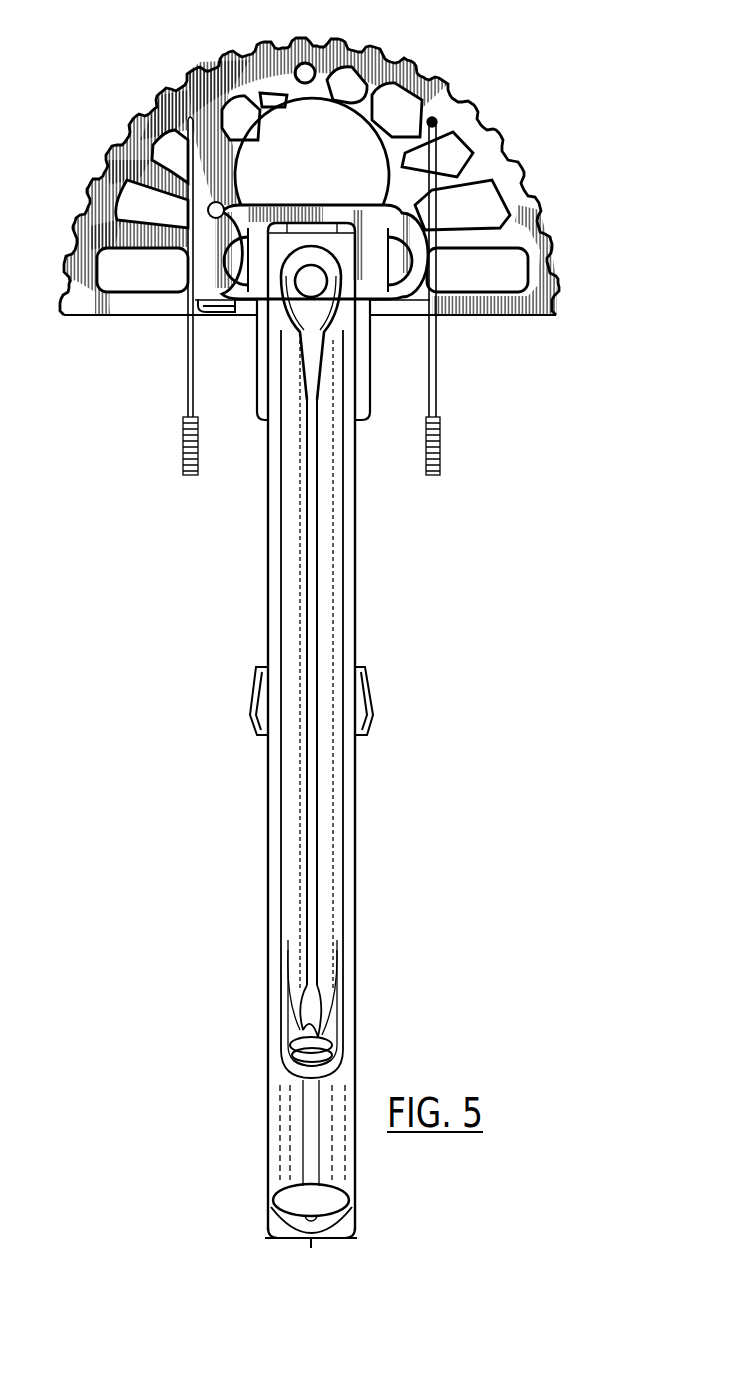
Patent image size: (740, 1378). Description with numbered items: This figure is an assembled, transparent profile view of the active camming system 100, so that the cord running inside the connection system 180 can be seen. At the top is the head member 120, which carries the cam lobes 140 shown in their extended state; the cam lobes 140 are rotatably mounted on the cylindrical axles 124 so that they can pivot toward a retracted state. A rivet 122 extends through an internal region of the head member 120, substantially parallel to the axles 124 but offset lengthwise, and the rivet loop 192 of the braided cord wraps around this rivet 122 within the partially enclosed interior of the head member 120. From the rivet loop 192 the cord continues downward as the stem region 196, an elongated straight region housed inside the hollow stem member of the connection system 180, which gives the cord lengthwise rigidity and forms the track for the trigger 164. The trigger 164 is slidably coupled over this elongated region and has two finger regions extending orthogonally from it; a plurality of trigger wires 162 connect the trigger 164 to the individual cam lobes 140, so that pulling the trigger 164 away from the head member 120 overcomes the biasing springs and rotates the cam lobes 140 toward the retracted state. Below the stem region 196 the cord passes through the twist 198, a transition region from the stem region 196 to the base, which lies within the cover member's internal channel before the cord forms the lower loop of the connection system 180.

The active camming system 100 is at (145, 55).
The head member 120 is at (325, 165).
The rivet 122 is at (307, 284).
The axle 124 is at (222, 260).
The cam lobes 140 is at (571, 330).
The trigger wires 162 is at (438, 426).
The trigger 164 is at (367, 716).
The connection system 180 is at (256, 877).
The rivet loop 192 is at (342, 288).
The stem region 196 is at (279, 603).
The twist 198 is at (320, 1003).